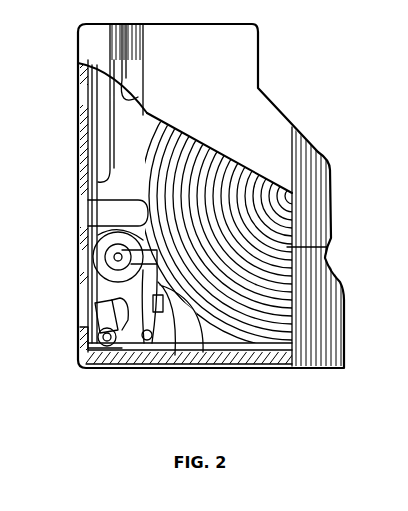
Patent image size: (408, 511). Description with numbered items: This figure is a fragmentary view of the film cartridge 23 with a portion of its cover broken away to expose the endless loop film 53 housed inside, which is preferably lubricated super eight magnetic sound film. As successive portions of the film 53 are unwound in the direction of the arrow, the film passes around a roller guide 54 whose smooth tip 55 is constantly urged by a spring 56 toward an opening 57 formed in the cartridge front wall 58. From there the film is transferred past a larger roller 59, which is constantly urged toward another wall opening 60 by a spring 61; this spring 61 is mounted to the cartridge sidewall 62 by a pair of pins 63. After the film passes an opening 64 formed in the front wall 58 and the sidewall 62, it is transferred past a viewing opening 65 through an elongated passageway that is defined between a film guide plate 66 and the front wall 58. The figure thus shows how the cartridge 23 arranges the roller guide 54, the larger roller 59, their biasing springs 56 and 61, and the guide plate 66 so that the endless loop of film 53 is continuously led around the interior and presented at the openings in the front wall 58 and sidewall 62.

The cartridge 23 is at (219, 74).
The endless loop film 53 is at (305, 246).
The roller guide 54 is at (100, 348).
The smooth tip 55 is at (94, 318).
The spring 56 is at (113, 348).
The opening 57 is at (98, 312).
The cartridge front wall 58 is at (90, 160).
The larger roller 59 is at (110, 248).
The wall opening 60 is at (100, 263).
The spring 61 is at (205, 352).
The cartridge sidewall 62 is at (256, 350).
The pins 63 is at (155, 345).
The opening 64 is at (82, 212).
The viewing opening 65 is at (78, 92).
The film guide plate 66 is at (128, 98).